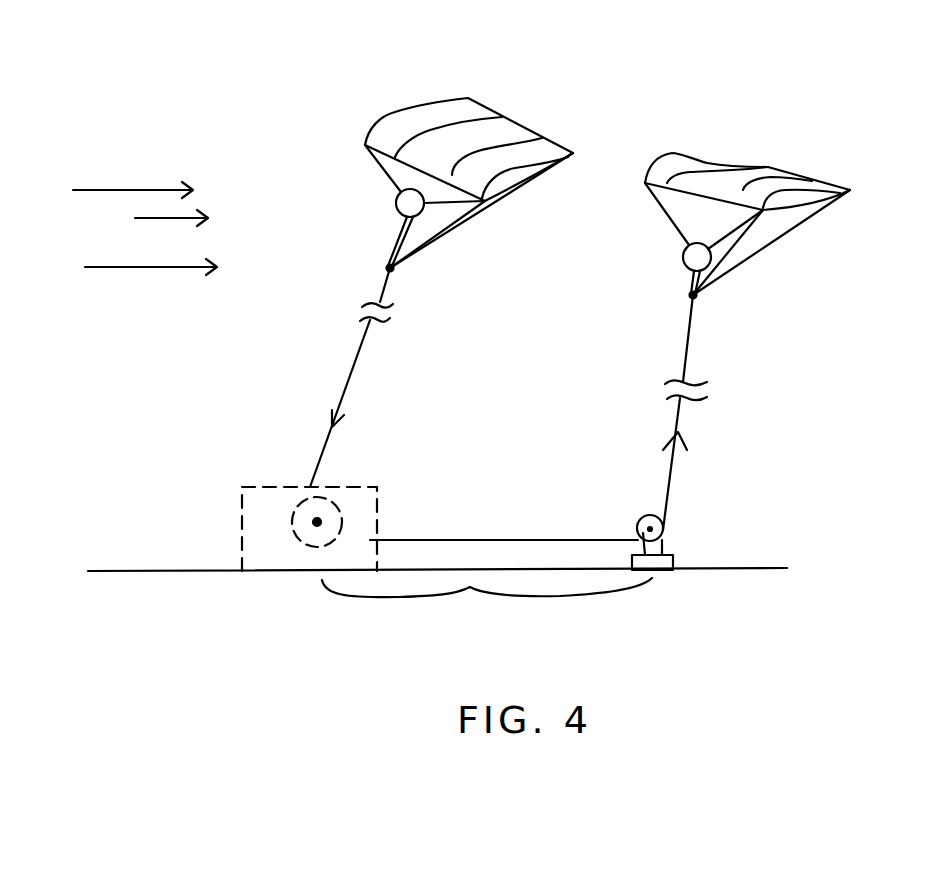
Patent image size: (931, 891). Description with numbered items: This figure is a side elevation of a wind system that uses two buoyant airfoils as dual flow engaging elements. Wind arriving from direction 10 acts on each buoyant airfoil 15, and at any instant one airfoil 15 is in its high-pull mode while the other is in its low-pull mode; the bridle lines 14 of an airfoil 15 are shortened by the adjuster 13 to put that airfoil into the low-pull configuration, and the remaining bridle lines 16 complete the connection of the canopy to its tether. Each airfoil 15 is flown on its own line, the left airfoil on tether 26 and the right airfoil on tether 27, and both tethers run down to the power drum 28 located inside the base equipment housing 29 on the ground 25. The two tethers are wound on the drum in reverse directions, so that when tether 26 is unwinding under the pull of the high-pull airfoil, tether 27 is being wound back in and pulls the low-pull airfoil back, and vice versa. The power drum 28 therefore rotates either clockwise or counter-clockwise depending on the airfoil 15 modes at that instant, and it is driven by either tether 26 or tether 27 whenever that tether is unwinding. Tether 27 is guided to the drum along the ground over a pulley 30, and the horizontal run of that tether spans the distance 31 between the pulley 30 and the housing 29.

The wind direction 10 is at (145, 228).
The adjuster 13 is at (395, 210).
The bridle lines 14 is at (382, 172).
The buoyant airfoil 15 is at (467, 110).
The bridle lines 16 is at (452, 240).
The ground 25 is at (712, 577).
The tether 26 is at (365, 367).
The tether 27 is at (683, 468).
The power drum 28 is at (297, 543).
The base equipment housing 29 is at (387, 498).
The pulley 30 is at (675, 538).
The span 31 is at (487, 607).